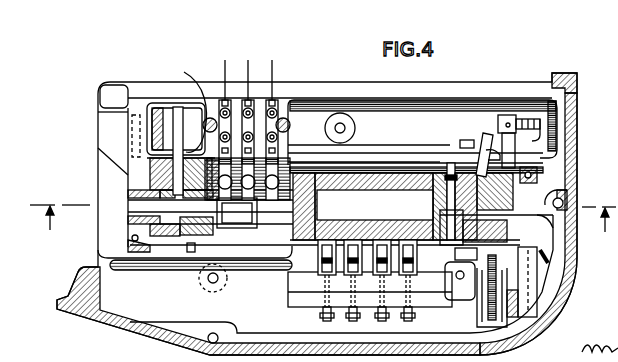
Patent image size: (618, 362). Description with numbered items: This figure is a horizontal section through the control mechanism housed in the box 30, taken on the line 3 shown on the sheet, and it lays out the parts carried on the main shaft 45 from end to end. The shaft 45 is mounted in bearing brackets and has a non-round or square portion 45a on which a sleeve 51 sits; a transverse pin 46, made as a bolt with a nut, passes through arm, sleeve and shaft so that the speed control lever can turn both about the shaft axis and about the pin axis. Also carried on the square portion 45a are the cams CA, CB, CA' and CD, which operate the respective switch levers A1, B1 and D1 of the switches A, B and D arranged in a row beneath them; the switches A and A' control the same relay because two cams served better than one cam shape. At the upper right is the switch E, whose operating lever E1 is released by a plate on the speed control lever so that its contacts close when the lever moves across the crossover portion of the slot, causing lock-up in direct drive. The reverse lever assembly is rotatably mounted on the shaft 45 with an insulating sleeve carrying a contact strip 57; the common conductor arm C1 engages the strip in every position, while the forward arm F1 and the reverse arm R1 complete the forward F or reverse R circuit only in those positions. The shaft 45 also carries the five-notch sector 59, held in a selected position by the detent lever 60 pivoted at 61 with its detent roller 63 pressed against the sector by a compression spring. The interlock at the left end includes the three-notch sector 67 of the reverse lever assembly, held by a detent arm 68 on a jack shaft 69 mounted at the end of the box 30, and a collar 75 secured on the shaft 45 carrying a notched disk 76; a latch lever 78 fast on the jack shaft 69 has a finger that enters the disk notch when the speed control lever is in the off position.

The box 30 is at (530, 334).
The shaft 45 is at (131, 203).
The square portion of the shaft 45a is at (372, 215).
The pin 46 is at (432, 167).
The sleeve 51 is at (465, 167).
The contact strip 57 is at (240, 230).
The sector 59 is at (478, 262).
The detent lever 60 is at (478, 321).
The pivot 61 is at (543, 300).
The detent roller 63 is at (507, 320).
The sector 67 is at (191, 254).
The detent arm 68 is at (183, 120).
The jack shaft 69 is at (160, 115).
The collar 75 is at (175, 240).
The disk 76 is at (162, 238).
The latch lever 78 is at (150, 137).
The section line 3 is at (323, 224).
The forward conductor arm F is at (250, 60).
The reverse conductor arm R is at (272, 60).
The contact arm for forward clutch engagement F1 is at (195, 108).
The contact arm for reverse clutch engagement R1 is at (290, 148).
The contact arm of a common conductor C1 is at (262, 140).
The cam CA is at (310, 149).
The cam CB is at (350, 167).
The cam CA' is at (359, 235).
The cam CD is at (408, 167).
The switch E is at (500, 120).
The operating lever E1 is at (475, 150).
The lever of switch A A1 is at (318, 286).
The lever of switch B B1 is at (349, 273).
The lever of switch D D1 is at (418, 286).
The switch A is at (326, 318).
The switch B is at (352, 320).
The switch D is at (406, 320).